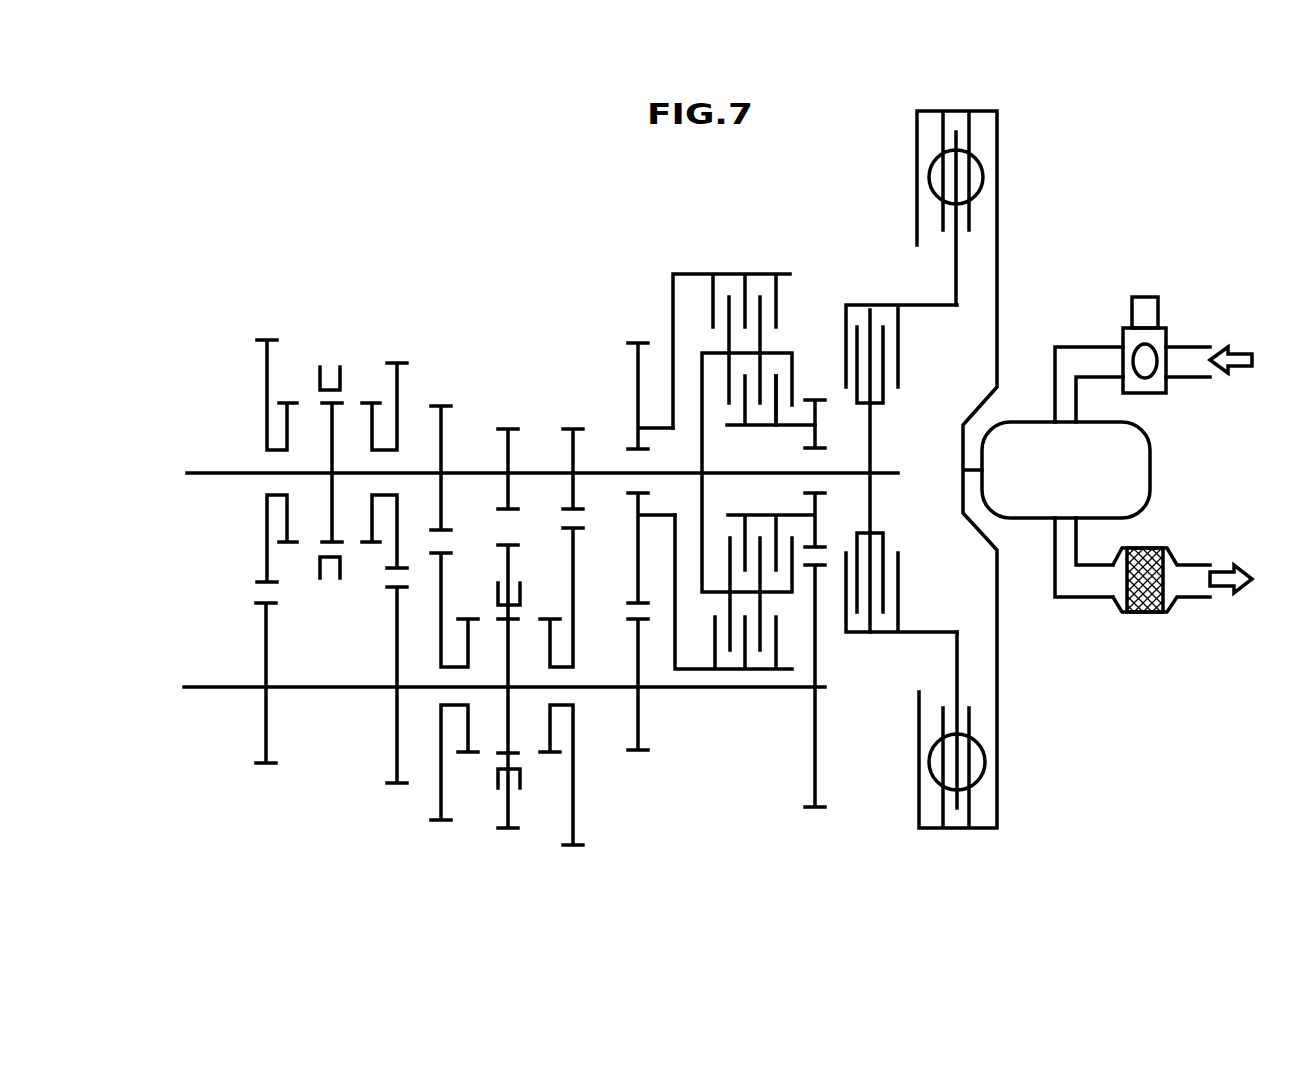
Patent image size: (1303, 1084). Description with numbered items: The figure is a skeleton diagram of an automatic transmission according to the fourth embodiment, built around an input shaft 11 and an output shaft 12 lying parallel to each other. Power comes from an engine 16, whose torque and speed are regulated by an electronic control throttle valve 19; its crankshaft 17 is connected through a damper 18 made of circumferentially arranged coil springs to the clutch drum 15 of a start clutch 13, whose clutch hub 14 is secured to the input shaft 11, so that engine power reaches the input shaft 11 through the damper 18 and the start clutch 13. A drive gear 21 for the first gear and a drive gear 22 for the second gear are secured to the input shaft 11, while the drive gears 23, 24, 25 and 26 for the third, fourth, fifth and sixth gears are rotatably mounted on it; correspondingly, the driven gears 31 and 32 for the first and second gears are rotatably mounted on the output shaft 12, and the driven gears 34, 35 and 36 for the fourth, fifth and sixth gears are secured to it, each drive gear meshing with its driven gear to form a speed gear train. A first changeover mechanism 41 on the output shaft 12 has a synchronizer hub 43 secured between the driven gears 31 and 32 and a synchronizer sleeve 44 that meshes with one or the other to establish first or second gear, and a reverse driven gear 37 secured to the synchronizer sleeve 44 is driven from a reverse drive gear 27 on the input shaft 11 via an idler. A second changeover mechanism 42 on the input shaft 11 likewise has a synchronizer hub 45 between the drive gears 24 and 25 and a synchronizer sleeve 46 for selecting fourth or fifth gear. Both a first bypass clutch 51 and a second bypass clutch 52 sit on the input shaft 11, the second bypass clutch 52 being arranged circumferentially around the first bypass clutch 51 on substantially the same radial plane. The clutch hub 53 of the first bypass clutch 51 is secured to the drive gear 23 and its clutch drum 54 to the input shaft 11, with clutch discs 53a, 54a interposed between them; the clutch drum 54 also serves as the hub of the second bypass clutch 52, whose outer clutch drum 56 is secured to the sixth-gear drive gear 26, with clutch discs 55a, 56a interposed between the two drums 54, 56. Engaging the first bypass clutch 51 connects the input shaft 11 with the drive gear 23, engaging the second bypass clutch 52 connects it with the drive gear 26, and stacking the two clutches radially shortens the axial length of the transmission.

The input shaft 11 is at (203, 472).
The output shaft 12 is at (204, 686).
The start clutch 13 is at (876, 301).
The clutch hub 14 is at (871, 516).
The clutch drum 15 is at (925, 305).
The engine 16 is at (1136, 466).
The crankshaft 17 is at (972, 475).
The damper 18 is at (985, 176).
The electronic control throttle valve 19 is at (1167, 306).
The drive gear for the first gear 21 is at (566, 438).
The drive gear for the second gear 22 is at (442, 418).
The drive gear for the third gear 23 is at (824, 401).
The drive gear for the fourth gear 24 is at (395, 380).
The drive gear for the fifth gear 25 is at (265, 372).
The drive gear for the sixth gear 26 is at (632, 349).
The reverse drive gear 27 is at (512, 441).
The driven gear for the first gear 31 is at (573, 848).
The driven gear for the second gear 32 is at (441, 822).
The driven gear for the fourth gear 34 is at (397, 737).
The driven gear for the fifth gear 35 is at (266, 737).
The driven gear for the sixth gear 36 is at (638, 752).
The reverse driven gear 37 is at (508, 830).
The first changeover mechanism 41 is at (533, 739).
The second changeover mechanism 42 is at (290, 506).
The synchronizer hub 43 is at (510, 740).
The synchronizer sleeve 44 is at (498, 782).
The synchronizer hub 45 is at (333, 508).
The synchronizer sleeve 46 is at (331, 568).
The first bypass clutch 51 is at (786, 597).
The second bypass clutch 52 is at (769, 643).
The clutch hub 53 is at (752, 515).
The clutch discs 53a is at (777, 413).
The clutch drum 54 is at (780, 352).
The clutch discs 54a is at (729, 405).
The clutch discs 55a is at (731, 652).
The clutch drum 56 is at (724, 274).
The clutch discs 56a is at (714, 652).